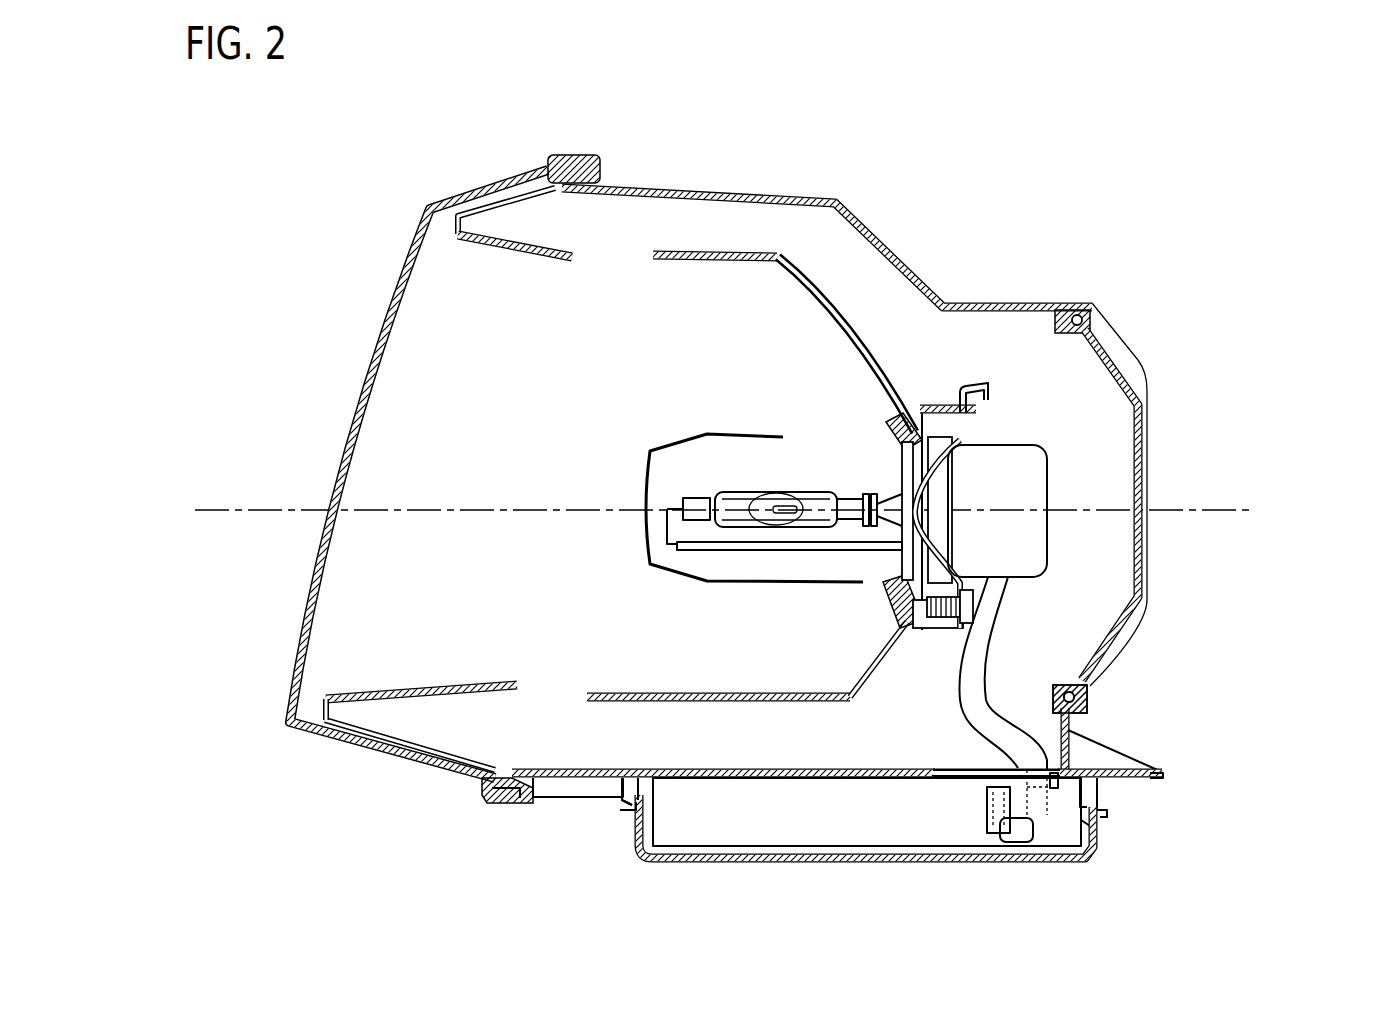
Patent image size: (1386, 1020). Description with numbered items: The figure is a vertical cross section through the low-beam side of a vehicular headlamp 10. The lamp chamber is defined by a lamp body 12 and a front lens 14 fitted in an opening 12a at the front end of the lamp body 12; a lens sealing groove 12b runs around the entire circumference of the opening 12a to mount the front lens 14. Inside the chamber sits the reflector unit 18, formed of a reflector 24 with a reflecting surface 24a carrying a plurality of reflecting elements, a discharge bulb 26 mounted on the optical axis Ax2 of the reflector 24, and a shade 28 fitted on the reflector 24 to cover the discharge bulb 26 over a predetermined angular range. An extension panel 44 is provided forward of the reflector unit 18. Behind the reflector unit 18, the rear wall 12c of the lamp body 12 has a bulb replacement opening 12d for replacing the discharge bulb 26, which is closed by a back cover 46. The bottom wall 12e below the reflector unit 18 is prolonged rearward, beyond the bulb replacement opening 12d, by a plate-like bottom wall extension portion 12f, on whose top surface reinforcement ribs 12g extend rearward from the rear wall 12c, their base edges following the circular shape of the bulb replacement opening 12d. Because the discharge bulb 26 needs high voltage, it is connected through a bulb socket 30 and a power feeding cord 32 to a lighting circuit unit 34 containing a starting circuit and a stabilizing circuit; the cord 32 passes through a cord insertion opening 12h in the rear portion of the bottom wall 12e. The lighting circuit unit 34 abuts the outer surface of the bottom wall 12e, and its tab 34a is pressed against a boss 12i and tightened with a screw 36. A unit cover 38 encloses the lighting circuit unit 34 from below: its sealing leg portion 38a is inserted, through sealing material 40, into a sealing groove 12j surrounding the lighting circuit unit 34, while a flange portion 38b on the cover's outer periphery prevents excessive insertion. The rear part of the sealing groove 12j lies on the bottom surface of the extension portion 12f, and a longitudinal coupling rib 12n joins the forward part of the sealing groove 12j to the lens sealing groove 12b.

The vehicular headlamp 10 is at (320, 213).
The lamp body 12 is at (893, 248).
The opening 12a is at (492, 776).
The lens sealing groove 12b is at (526, 804).
The rear wall 12c is at (1058, 762).
The bulb replacement opening 12d is at (1087, 710).
The bottom wall 12e is at (748, 770).
The bottom wall extension portion 12f is at (1166, 779).
The reinforcement ribs 12g is at (1105, 755).
The cord insertion opening 12h is at (942, 792).
The boss 12i is at (987, 800).
The sealing groove 12j is at (650, 796).
The coupling rib 12n is at (582, 799).
The front lens 14 is at (378, 326).
The reflector unit 18 is at (580, 420).
The reflector 24 is at (900, 375).
The reflecting surface 24a is at (842, 322).
The discharge bulb 26 is at (790, 487).
The shade 28 is at (667, 577).
The bulb socket 30 is at (1002, 470).
The power feeding cord 32 is at (993, 632).
The lighting circuit unit 34 is at (840, 828).
The tab 34a is at (1060, 822).
The screw 36 is at (1030, 844).
The unit cover 38 is at (768, 866).
The sealing leg portion 38a is at (622, 790).
The flange portion 38b is at (630, 818).
The sealing material 40 is at (613, 779).
The extension panel 44 is at (440, 682).
The back cover 46 is at (1148, 440).
The optical axis Ax2 is at (256, 506).